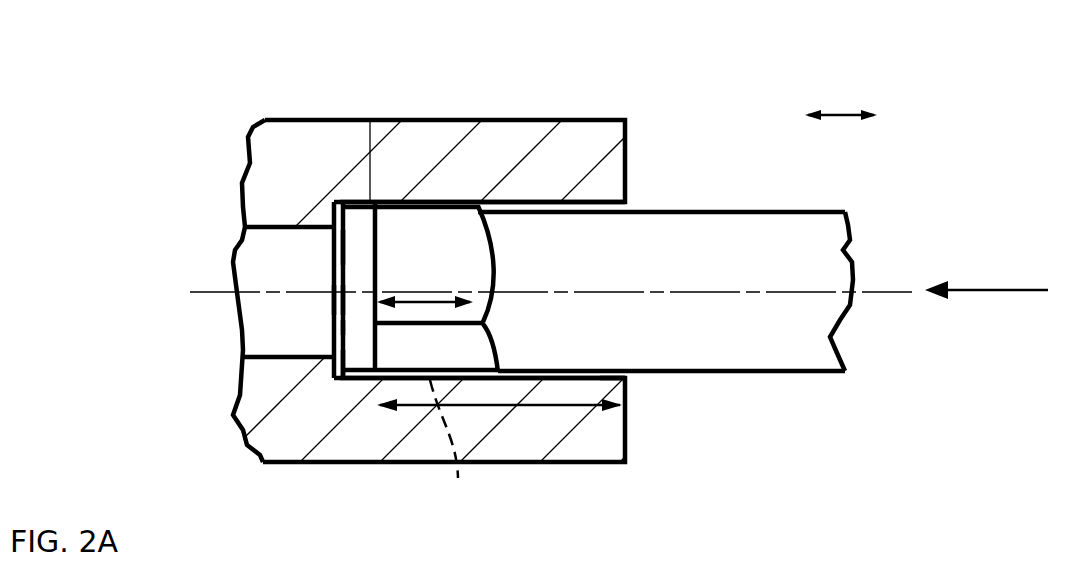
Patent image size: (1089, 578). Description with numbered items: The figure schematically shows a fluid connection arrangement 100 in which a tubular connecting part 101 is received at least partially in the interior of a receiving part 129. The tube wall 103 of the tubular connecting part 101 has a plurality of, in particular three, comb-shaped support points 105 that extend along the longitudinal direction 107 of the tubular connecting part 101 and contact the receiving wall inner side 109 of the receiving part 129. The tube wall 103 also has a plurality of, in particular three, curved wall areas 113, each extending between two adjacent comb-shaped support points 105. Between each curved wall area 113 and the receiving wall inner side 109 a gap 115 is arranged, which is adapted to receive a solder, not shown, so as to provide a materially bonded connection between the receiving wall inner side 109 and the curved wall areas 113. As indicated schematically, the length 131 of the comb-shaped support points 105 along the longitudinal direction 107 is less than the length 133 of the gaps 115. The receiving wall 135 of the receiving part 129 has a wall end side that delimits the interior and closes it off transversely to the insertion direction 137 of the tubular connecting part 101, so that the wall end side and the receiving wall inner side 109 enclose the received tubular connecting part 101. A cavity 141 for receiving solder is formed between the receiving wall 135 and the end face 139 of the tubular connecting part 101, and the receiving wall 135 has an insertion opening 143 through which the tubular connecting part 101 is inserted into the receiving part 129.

The fluid connection arrangement 100 is at (195, 243).
The tubular connecting part 101 is at (848, 259).
The tube wall 103 is at (802, 375).
The comb-shaped support points 105 is at (396, 203).
The longitudinal direction 107 is at (823, 108).
The receiving wall inner side 109 is at (627, 201).
The curved wall areas 113 is at (332, 230).
The gap 115 is at (455, 448).
The receiving part 129 is at (520, 119).
The length of the comb-shaped support points 131 is at (445, 296).
The length of the gaps 133 is at (627, 407).
The receiving wall 135 is at (340, 300).
The insertion direction 137 is at (985, 292).
The end face 139 is at (338, 374).
The cavity 141 is at (362, 247).
The insertion opening 143 is at (628, 378).